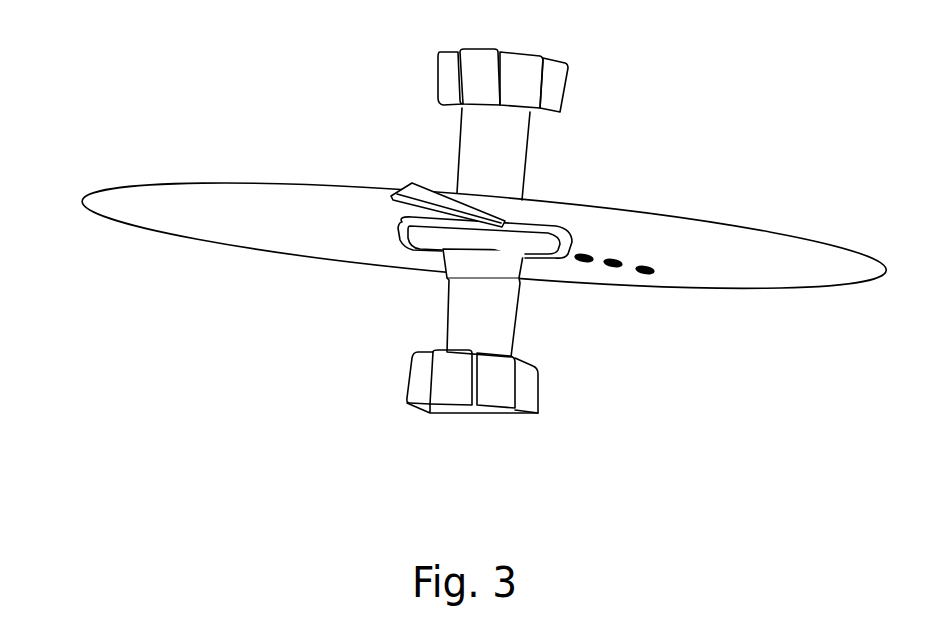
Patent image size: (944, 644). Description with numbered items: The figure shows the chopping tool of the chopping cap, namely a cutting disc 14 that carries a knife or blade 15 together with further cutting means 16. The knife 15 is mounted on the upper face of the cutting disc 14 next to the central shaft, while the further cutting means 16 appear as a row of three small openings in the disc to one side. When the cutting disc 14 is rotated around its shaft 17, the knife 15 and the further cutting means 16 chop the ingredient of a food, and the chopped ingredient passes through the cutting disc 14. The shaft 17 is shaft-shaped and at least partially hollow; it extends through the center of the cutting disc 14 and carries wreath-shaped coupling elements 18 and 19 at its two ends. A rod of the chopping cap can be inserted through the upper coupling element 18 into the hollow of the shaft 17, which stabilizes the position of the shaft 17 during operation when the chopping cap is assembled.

The cutting disc 14 is at (183, 163).
The knife 15 is at (432, 192).
The further cutting means 16 is at (603, 268).
The shaft 17 is at (457, 320).
The upper coupling element 18 is at (445, 58).
The coupling element 19 is at (425, 380).